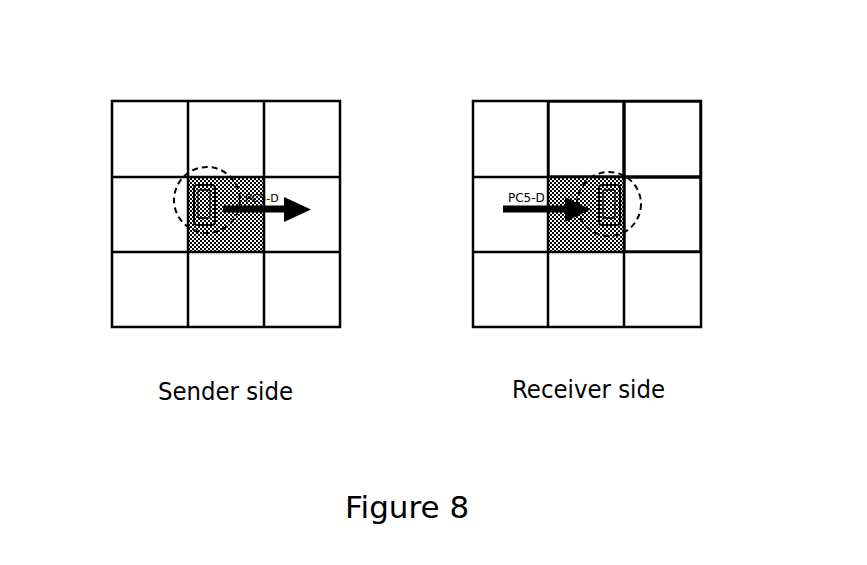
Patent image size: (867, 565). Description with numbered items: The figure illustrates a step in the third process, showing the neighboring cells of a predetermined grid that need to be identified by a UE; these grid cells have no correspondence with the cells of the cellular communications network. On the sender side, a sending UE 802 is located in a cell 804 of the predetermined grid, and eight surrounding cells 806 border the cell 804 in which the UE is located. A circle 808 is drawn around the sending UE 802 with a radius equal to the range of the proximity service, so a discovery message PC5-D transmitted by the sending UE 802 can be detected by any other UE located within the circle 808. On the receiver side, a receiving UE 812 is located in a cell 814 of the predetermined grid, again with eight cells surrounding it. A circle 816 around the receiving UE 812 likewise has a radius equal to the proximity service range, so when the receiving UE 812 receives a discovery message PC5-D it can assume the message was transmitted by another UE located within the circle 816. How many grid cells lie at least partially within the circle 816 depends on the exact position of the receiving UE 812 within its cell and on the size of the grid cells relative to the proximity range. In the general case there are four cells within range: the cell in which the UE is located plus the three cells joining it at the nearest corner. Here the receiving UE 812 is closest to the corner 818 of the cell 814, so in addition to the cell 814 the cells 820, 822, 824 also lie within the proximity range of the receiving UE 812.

The sending UE 802 is at (190, 207).
The cell 804 is at (250, 235).
The cells 806 is at (138, 123).
The circle 808 is at (177, 195).
The receiving UE 812 is at (626, 230).
The cell 814 is at (580, 250).
The circle 816 is at (642, 206).
The corner 818 is at (624, 177).
The cell 820 is at (588, 122).
The cell 822 is at (677, 145).
The cell 824 is at (687, 187).